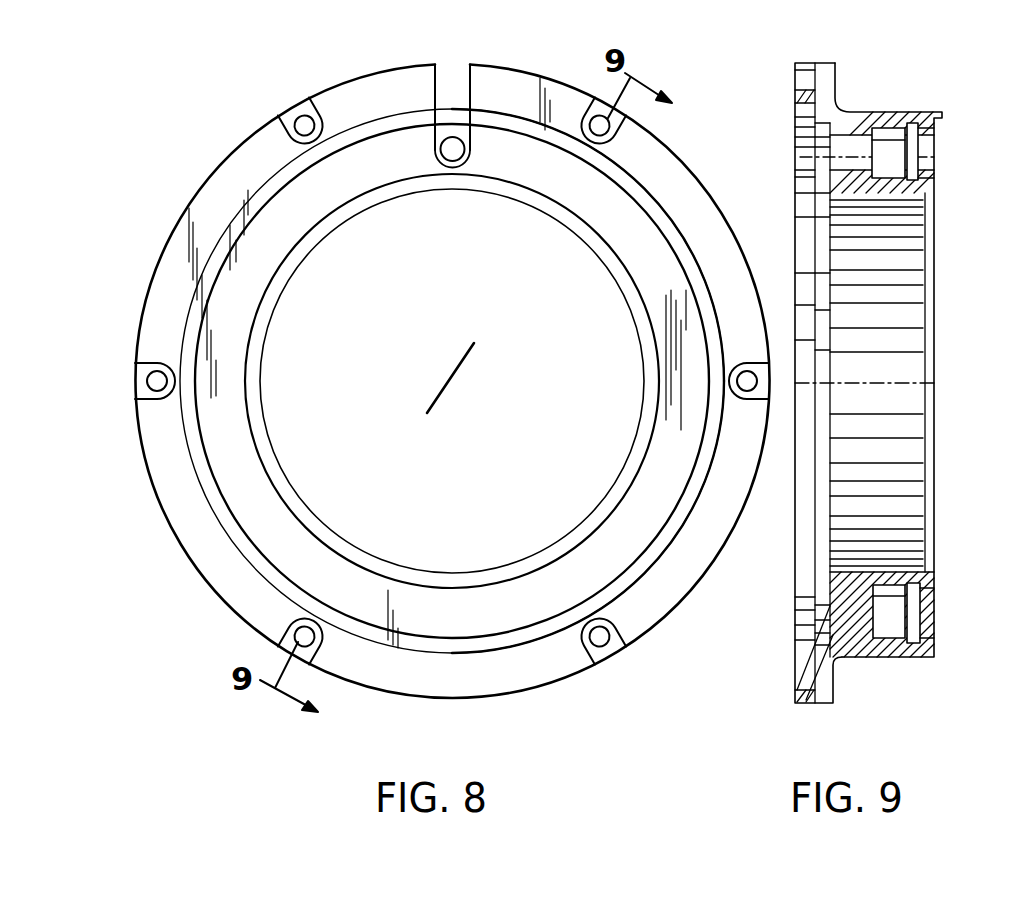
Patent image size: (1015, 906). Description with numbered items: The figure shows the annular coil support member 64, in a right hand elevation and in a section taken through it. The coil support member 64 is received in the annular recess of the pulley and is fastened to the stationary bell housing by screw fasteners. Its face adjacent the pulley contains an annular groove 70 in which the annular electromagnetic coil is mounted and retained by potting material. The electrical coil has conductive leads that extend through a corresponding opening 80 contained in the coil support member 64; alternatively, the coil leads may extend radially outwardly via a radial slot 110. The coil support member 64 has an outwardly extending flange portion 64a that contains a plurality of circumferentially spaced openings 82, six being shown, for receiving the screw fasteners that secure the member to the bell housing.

In FIG. 8, the coil support member 64 is at (503, 70).
In FIG. 9, the coil support member 64 is at (893, 112).
In FIG. 9, the flange portion 64a is at (795, 66).
In FIG. 8, the annular groove 70 is at (596, 208).
In FIG. 9, the annular groove 70 is at (923, 149).
In FIG. 8, the opening 80 is at (442, 147).
In FIG. 9, the opening 80 is at (830, 157).
In FIG. 8, the circumferentially spaced openings 82 is at (302, 122).
In FIG. 9, the circumferentially spaced openings 82 is at (808, 85).
In FIG. 8, the radial slot 110 is at (452, 82).